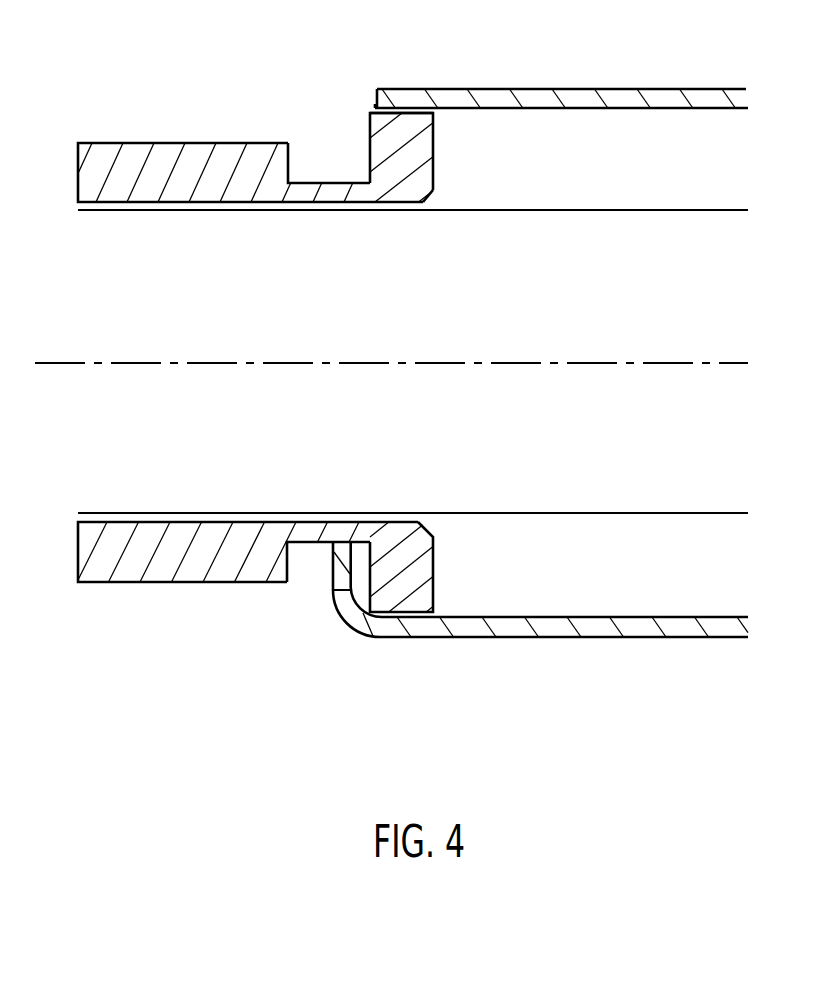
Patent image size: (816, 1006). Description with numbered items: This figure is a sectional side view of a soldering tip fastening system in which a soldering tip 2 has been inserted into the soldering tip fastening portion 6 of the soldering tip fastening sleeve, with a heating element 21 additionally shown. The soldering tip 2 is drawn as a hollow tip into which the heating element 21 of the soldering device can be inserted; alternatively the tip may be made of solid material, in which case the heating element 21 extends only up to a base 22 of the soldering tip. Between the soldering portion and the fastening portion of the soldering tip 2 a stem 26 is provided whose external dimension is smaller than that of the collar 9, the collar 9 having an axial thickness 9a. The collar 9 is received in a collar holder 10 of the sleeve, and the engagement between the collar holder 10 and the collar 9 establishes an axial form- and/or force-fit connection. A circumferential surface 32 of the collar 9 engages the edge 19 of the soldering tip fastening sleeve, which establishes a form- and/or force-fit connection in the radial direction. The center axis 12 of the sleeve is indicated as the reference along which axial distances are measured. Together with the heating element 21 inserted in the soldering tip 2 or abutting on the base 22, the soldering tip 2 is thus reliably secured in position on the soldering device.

The soldering tip 2 is at (97, 113).
The soldering tip fastening portion 6 is at (565, 51).
The collar 9 is at (370, 133).
The axial thickness 9a is at (433, 618).
The collar holder 10 is at (352, 612).
The center axis 12 is at (45, 362).
The edge 19 is at (377, 106).
The heating element 21 is at (681, 210).
The base 22 is at (436, 162).
The stem 26 is at (311, 182).
The circumferential surface 32 is at (408, 113).